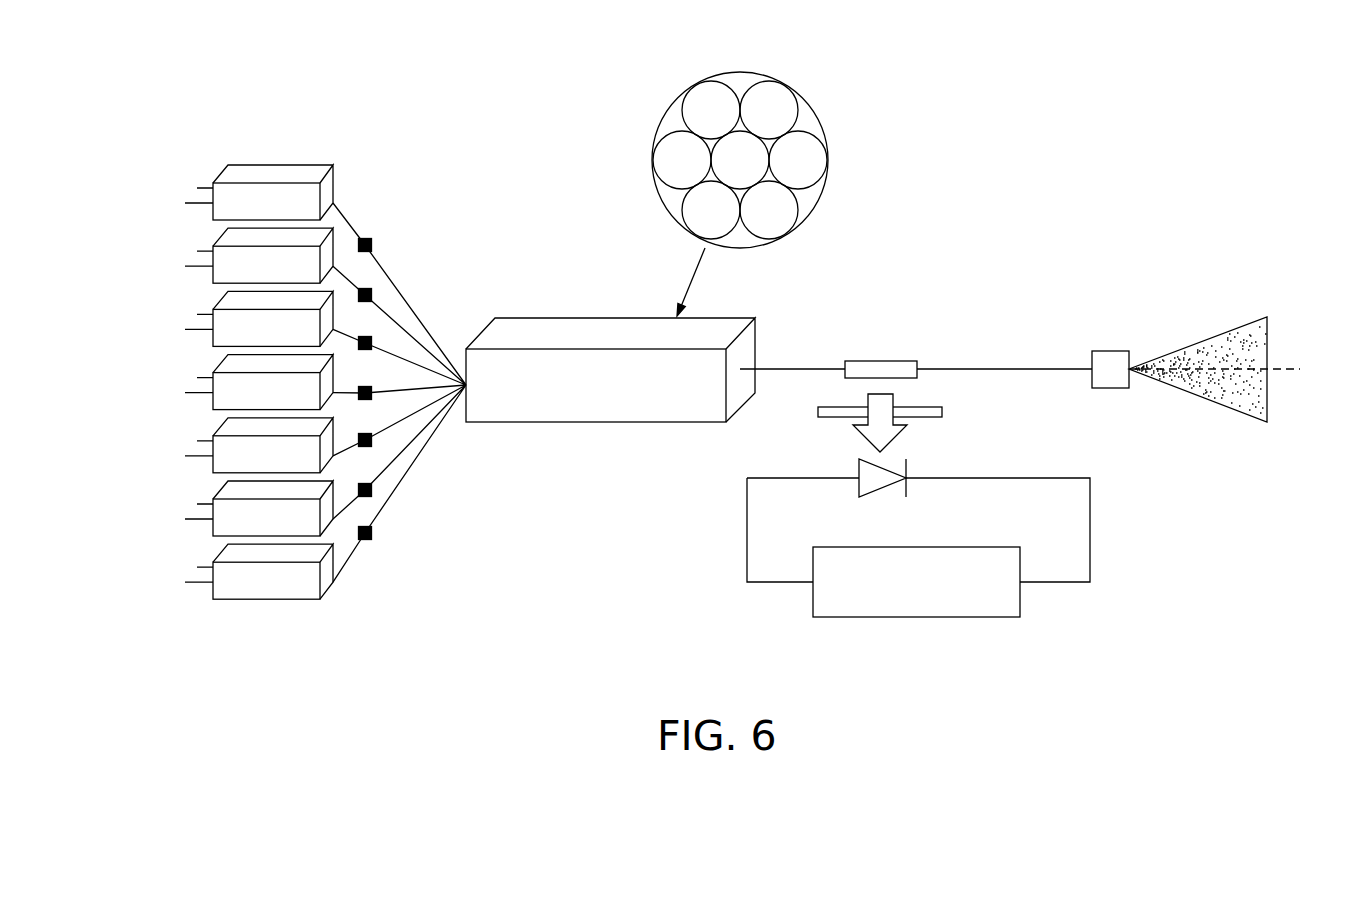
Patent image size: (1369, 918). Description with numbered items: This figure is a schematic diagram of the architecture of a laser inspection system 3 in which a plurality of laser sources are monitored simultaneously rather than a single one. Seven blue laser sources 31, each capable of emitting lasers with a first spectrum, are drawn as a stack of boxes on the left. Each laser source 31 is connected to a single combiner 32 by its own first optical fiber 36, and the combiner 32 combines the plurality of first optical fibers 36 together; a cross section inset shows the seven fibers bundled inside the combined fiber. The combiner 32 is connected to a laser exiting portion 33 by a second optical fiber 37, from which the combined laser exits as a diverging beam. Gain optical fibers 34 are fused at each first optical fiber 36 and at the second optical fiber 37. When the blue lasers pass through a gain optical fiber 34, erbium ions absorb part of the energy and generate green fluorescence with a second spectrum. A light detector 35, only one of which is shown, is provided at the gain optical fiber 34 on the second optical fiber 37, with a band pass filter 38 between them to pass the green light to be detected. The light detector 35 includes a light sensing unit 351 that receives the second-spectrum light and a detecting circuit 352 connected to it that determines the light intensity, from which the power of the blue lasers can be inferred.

The laser inspection system 3 is at (183, 65).
The laser source 31 is at (276, 165).
The combiner 32 is at (549, 318).
The laser exiting portion 33 is at (1112, 351).
The gain optical fiber 34 is at (368, 239).
The light detector 35 is at (680, 452).
The light sensing unit 351 is at (858, 472).
The detecting circuit 352 is at (813, 604).
The first optical fiber 36 is at (402, 293).
The second optical fiber 37 is at (776, 369).
The band pass filter 38 is at (921, 407).